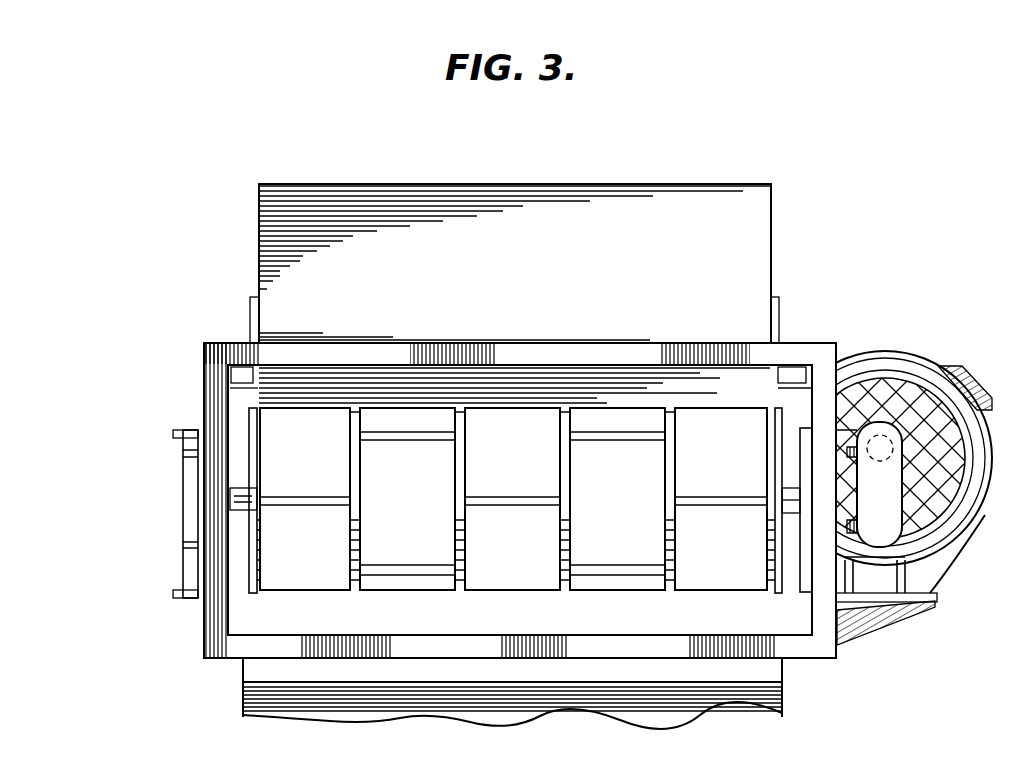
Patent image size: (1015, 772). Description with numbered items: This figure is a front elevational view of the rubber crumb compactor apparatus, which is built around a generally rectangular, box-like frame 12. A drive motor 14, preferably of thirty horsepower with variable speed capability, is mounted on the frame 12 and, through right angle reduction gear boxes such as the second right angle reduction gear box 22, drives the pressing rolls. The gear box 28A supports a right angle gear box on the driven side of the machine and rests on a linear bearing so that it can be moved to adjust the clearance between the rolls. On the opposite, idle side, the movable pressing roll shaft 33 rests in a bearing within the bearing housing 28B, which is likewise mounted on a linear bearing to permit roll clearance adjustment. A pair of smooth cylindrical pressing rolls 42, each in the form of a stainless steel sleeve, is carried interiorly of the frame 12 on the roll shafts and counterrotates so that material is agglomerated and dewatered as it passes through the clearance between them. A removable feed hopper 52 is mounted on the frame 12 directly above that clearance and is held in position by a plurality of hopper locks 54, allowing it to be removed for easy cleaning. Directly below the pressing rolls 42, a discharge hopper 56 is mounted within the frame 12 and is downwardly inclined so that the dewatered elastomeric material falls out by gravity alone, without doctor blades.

The frame 12 is at (672, 668).
The drive motor 14 is at (907, 352).
The second right angle reduction gear box 22 is at (897, 500).
The gear box 28A is at (847, 577).
The bearing housing 28B is at (190, 580).
The movable pressing roll shaft 33 is at (237, 510).
The pressing roll 42 is at (531, 562).
The feed hopper 52 is at (530, 205).
The hopper locks 54 is at (778, 333).
The discharge hopper 56 is at (519, 698).